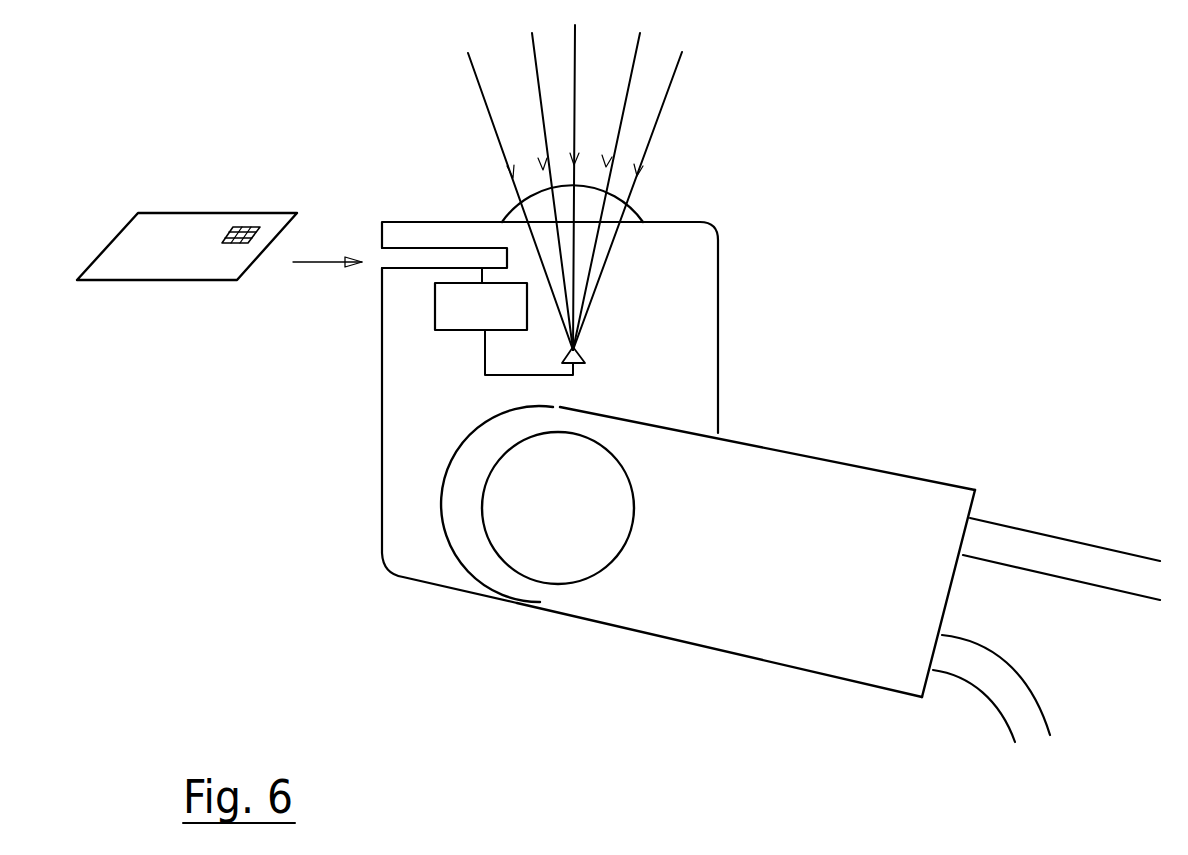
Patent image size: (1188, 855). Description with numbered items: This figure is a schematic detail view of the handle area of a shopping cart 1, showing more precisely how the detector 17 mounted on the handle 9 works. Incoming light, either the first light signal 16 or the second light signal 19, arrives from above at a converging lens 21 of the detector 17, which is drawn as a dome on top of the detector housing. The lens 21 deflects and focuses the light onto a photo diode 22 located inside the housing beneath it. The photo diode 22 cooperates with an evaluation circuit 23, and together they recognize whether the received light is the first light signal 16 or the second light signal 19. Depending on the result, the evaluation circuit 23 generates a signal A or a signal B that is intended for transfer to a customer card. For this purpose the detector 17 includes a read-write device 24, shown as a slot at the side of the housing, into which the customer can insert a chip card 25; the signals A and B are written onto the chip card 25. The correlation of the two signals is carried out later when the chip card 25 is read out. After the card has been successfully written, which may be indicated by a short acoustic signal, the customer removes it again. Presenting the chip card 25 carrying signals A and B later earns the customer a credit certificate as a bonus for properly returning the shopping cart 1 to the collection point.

The shopping cart 1 is at (1053, 555).
The handle 9 is at (523, 535).
The first light signal 16 is at (748, 187).
The second light signal 19 is at (675, 78).
The detector 17 is at (757, 338).
The converging lens 21 is at (640, 212).
The photo diode 22 is at (565, 360).
The evaluation circuit 23 is at (450, 313).
The read-write device 24 is at (427, 258).
The chip card 25 is at (190, 233).